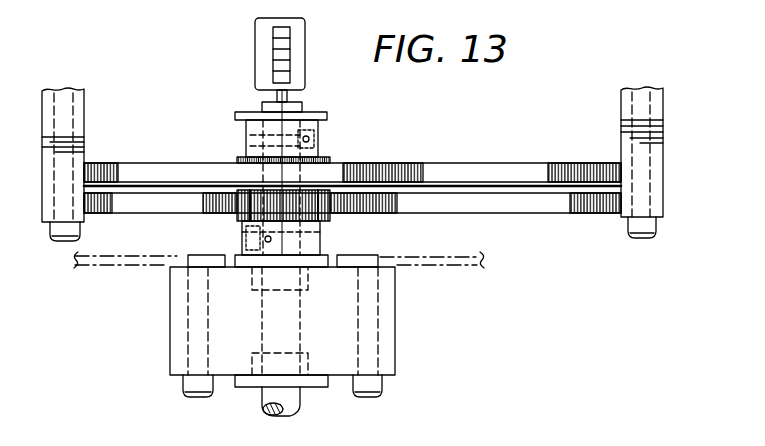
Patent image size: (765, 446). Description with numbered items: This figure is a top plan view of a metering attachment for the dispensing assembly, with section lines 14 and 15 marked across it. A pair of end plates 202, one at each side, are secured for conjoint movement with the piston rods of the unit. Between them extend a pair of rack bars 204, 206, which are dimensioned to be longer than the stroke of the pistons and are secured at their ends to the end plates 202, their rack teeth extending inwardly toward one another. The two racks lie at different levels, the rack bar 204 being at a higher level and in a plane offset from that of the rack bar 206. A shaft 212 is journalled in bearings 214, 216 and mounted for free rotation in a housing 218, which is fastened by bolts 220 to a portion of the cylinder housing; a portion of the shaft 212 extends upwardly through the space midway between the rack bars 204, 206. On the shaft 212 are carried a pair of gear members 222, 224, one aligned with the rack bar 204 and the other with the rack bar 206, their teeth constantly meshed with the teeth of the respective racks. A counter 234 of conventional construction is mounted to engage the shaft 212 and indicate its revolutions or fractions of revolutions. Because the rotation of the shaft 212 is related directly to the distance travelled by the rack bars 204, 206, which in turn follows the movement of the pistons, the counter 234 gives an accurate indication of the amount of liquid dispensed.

The section line 14- 14 is at (177, 188).
The section line 15- 15 is at (290, 98).
The end plates 202 is at (78, 126).
The rack bar 204 is at (474, 168).
The rack bar 206 is at (554, 205).
The shaft 212 is at (295, 403).
The bearing 214 is at (263, 377).
The bearing 216 is at (300, 270).
The housing 218 is at (387, 310).
The bolts 220 is at (373, 385).
The gear member 222 is at (240, 157).
The gear member 224 is at (240, 214).
The counter 234 is at (255, 44).